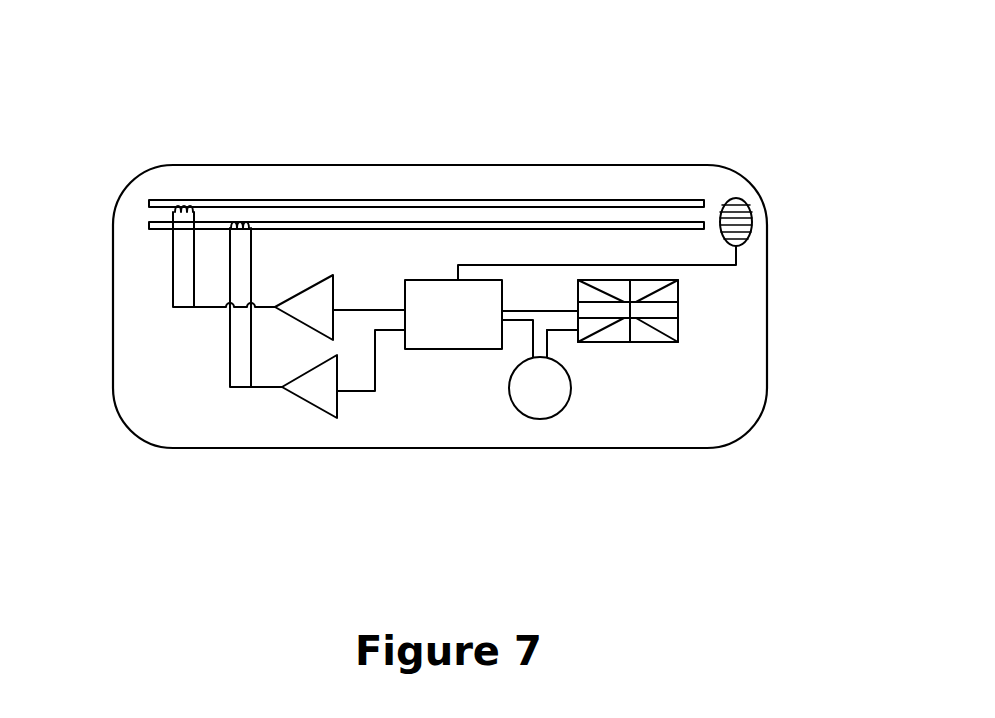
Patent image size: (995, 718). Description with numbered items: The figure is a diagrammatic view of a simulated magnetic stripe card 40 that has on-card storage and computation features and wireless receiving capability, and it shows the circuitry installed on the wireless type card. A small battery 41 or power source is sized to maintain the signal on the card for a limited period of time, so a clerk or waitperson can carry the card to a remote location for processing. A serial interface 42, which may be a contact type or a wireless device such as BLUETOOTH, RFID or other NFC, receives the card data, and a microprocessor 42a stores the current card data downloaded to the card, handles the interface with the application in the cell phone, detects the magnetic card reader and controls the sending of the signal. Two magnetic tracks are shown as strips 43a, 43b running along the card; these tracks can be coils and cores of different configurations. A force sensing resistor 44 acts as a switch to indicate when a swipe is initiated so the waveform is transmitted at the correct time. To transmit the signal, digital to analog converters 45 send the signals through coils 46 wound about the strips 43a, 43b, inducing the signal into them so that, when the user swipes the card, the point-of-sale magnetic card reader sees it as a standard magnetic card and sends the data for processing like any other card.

The simulated magnetic stripe card 40 is at (222, 130).
The battery 41 is at (540, 395).
The serial interface 42 is at (660, 342).
The microprocessor 42a is at (477, 328).
The strip 43a is at (705, 217).
The strip 43b is at (638, 203).
The force sensing resistor 44 is at (748, 221).
The digital to analog converters 45 is at (287, 310).
The coils 46 is at (173, 202).